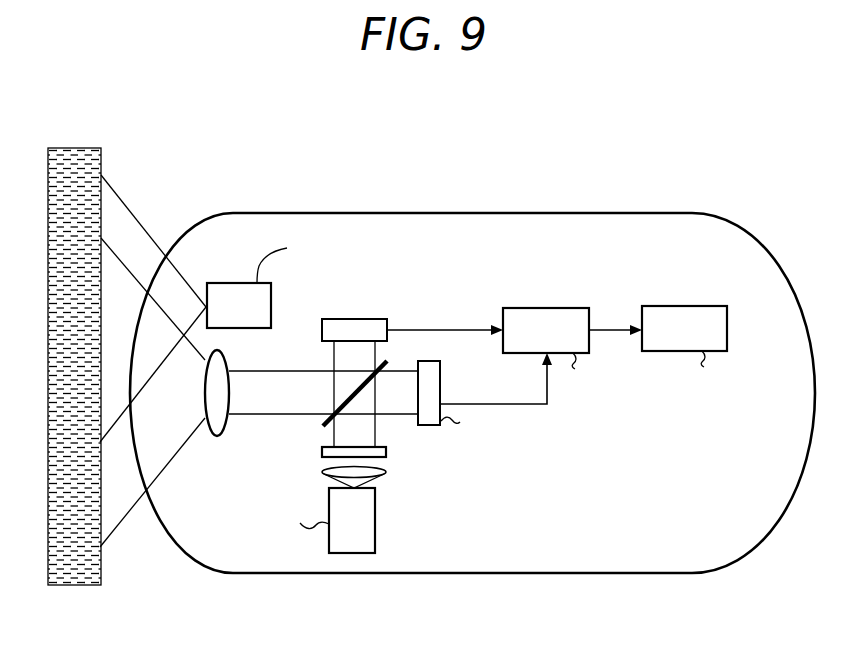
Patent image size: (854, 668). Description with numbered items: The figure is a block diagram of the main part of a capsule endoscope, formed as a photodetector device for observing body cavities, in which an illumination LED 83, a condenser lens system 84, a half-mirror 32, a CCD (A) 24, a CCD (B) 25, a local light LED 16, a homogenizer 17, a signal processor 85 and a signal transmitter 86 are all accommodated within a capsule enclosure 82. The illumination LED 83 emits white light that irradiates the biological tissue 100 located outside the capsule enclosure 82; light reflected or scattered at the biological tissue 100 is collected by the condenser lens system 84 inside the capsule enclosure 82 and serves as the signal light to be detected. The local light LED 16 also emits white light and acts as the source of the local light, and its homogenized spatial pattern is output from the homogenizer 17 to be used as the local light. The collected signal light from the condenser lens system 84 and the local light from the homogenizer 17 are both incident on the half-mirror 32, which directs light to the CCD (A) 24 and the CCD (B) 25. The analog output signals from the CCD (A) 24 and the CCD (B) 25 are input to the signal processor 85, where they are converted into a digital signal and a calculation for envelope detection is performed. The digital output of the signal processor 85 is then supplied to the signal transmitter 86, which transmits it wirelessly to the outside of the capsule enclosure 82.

The biological tissue 100 is at (71, 148).
The capsule enclosure 82 is at (292, 213).
The illumination LED 83 is at (218, 283).
The CCD (A) 24 is at (367, 319).
The CCD (B) 25 is at (441, 379).
The condenser lens system 84 is at (218, 437).
The half-mirror 32 is at (323, 427).
The homogenizer 17 is at (386, 452).
The local light LED 16 is at (375, 541).
The signal processor 85 is at (525, 308).
The signal transmitter 86 is at (663, 310).